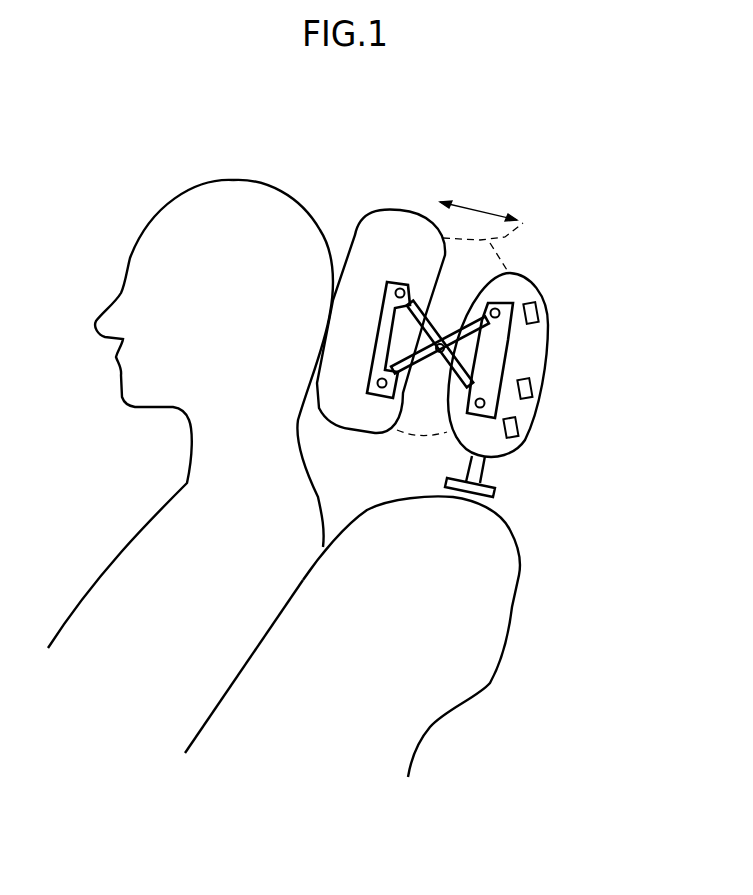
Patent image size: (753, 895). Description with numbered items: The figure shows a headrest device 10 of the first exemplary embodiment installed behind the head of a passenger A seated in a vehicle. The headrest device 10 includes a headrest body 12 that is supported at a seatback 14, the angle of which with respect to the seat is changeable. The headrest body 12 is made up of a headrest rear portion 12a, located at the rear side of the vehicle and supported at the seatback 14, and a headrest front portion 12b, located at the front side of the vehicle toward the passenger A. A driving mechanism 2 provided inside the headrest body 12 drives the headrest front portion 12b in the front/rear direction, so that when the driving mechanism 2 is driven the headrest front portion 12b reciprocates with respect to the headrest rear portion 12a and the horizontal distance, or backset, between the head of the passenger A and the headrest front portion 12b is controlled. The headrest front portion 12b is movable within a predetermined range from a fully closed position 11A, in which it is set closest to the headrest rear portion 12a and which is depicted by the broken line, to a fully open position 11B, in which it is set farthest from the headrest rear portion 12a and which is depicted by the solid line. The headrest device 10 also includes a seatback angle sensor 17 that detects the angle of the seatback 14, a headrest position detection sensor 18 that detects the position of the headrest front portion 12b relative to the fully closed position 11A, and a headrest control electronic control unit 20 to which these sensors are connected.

The passenger A is at (232, 178).
The headrest device 10 is at (505, 189).
The headrest front portion 12b is at (398, 210).
The headrest body 12 is at (661, 257).
The headrest rear portion 12a is at (535, 287).
The headrest control electronic control unit (ECU) 20 is at (538, 318).
The driving mechanism 2 is at (507, 353).
The seatback angle sensor 17 is at (531, 387).
The headrest position detection sensor 18 is at (520, 430).
The fully open position 11B is at (413, 329).
The fully closed position 11A is at (537, 404).
The seatback 14 is at (513, 608).